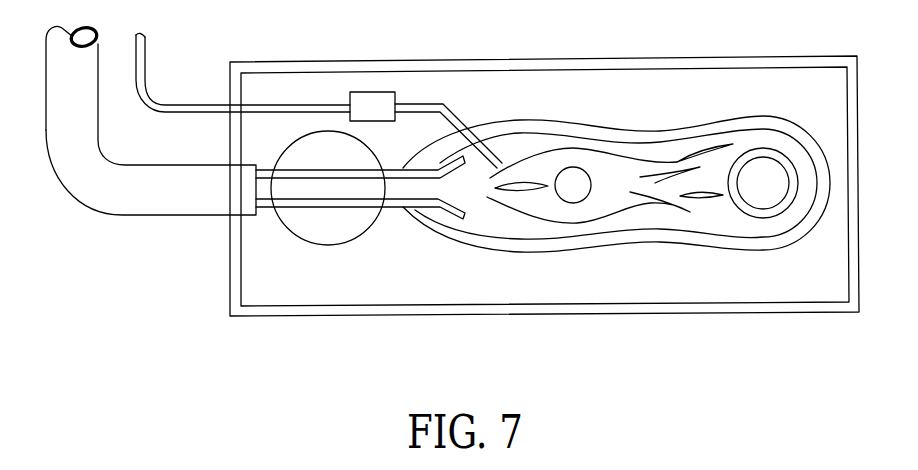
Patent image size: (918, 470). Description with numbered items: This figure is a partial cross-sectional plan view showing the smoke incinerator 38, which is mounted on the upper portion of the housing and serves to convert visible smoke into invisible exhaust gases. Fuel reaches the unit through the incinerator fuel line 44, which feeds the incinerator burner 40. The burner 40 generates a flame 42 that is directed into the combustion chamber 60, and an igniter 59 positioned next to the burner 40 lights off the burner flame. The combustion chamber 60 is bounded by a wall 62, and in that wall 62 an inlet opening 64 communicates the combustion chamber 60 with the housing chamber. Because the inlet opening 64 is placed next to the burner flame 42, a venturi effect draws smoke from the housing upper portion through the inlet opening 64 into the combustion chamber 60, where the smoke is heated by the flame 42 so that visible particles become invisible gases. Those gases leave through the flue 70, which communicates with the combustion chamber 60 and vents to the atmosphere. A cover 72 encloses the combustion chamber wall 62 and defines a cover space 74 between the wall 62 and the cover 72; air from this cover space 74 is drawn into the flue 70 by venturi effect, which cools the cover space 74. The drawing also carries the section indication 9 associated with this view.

The fluid supply tube assembly 9 is at (313, 243).
The smoke incinerator 38 is at (525, 58).
The incinerator burner 40 is at (323, 207).
The flame 42 is at (608, 197).
The incinerator fuel line 44 is at (183, 217).
The igniter 59 is at (363, 92).
The combustion chamber 60 is at (520, 150).
The wall 62 is at (625, 128).
The inlet opening 64 is at (578, 188).
The flue 70 is at (752, 150).
The cover 72 is at (605, 58).
The cover space 74 is at (794, 273).